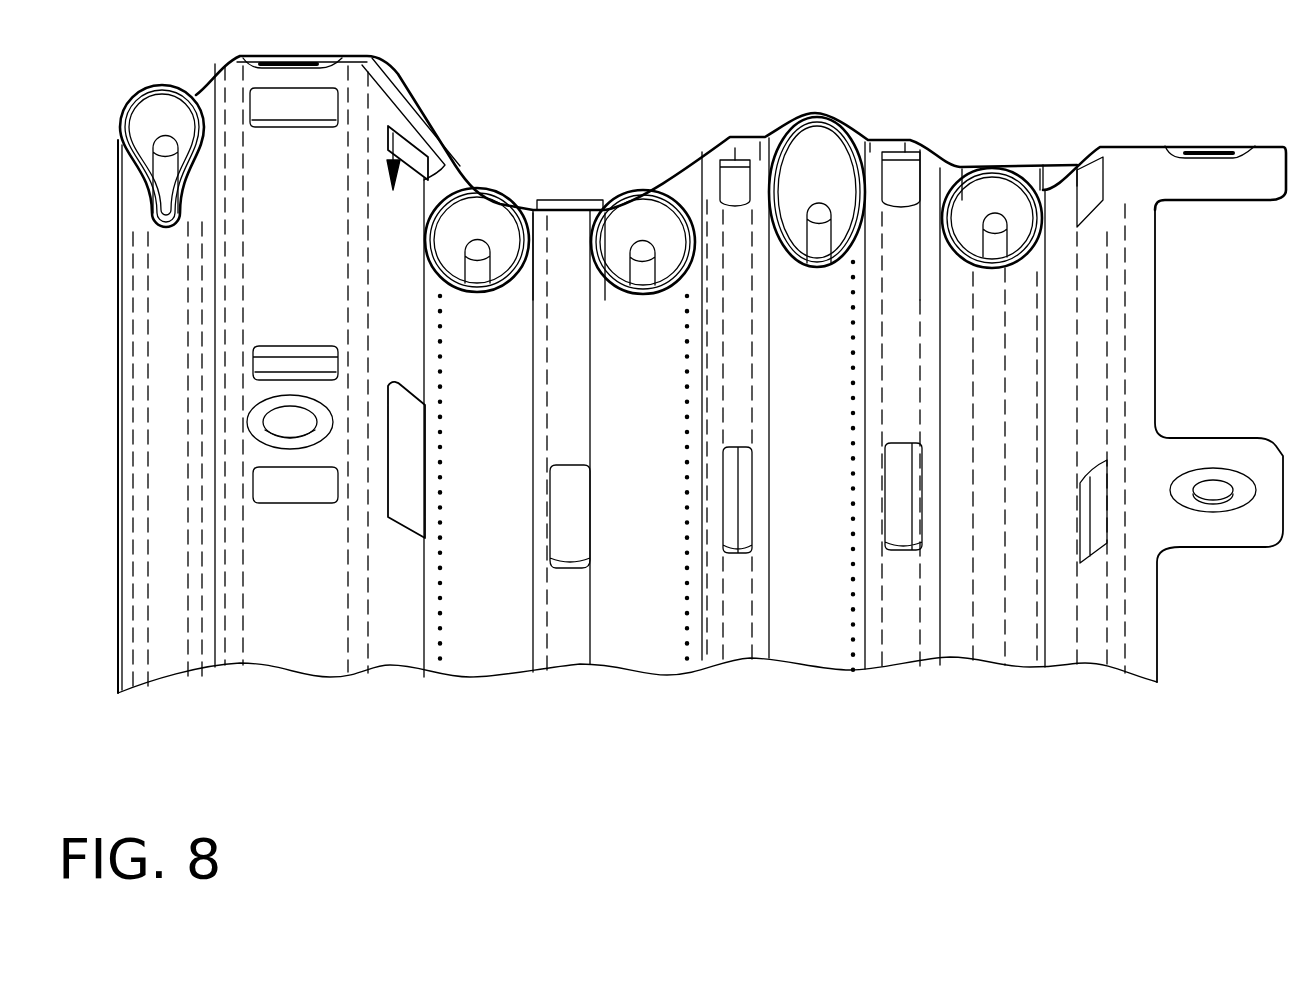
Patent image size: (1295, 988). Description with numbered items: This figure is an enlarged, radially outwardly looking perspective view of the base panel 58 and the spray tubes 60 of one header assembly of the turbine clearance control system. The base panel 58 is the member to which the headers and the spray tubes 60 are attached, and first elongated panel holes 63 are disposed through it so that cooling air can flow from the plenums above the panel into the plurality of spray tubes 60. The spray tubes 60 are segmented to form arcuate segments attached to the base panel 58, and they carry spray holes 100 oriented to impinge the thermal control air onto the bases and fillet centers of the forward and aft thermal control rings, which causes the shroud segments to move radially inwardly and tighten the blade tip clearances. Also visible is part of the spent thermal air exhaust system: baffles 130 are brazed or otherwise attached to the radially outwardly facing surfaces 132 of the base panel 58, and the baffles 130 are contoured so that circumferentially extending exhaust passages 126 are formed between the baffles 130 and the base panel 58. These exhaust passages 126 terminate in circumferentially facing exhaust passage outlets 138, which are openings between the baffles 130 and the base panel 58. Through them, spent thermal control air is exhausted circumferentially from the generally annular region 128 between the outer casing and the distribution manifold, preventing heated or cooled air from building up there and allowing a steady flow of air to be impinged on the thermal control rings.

The base panel 58 is at (383, 105).
The spray tubes 60 is at (170, 655).
The first elongated panel holes 63 is at (160, 142).
The spray holes 100 is at (458, 515).
The exhaust passages 126 is at (420, 146).
The annular region 128 is at (412, 112).
The baffles 130 is at (1105, 148).
The radially outwardly facing surfaces 132 is at (398, 76).
The exhaust passage outlets 138 is at (402, 88).